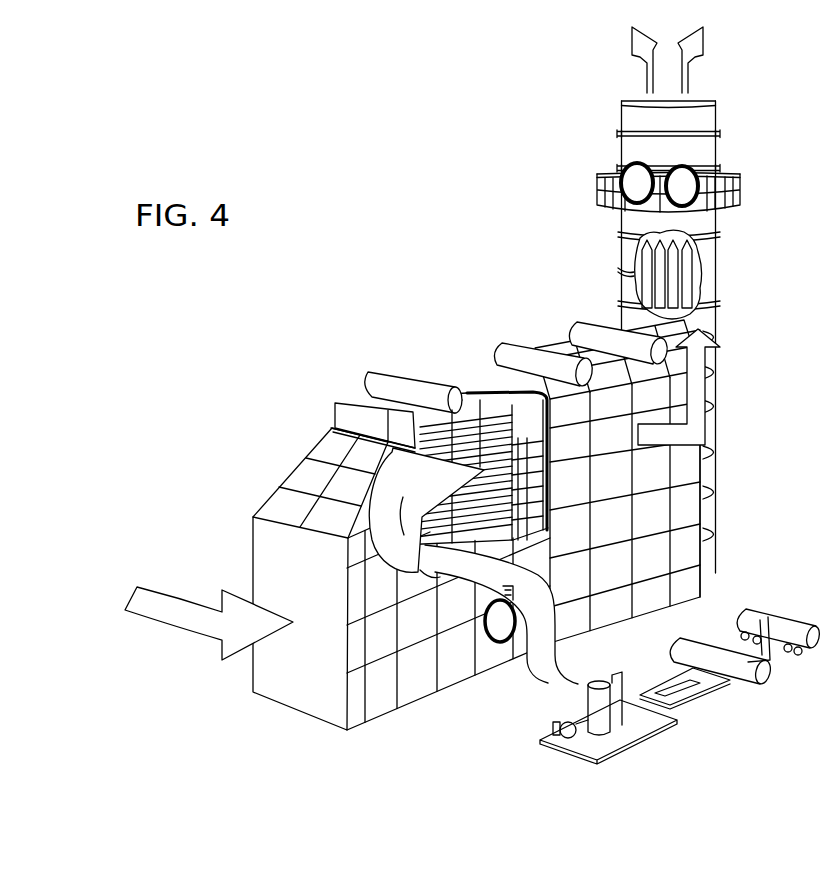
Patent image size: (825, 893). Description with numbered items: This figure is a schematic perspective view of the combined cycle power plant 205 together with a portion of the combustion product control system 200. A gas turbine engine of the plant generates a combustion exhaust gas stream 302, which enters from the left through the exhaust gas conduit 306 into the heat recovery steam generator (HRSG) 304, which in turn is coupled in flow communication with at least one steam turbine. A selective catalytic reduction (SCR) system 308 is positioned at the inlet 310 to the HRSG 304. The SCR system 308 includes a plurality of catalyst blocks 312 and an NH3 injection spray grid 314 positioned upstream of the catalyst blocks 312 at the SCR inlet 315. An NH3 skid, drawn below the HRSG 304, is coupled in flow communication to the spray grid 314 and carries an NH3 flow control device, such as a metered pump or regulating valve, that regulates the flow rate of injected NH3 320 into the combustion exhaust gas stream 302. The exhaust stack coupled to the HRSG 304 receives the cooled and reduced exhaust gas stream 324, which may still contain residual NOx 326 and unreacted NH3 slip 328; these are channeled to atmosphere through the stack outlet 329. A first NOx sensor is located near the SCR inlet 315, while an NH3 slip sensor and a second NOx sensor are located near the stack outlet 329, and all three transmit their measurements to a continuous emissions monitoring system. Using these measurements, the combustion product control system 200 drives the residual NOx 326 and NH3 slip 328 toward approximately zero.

The combustion product control system 200 is at (587, 768).
The combined cycle power plant 205 is at (488, 230).
The combustion exhaust gas stream 302 is at (140, 605).
The heat recovery steam generator (HRSG) 304 is at (668, 467).
The exhaust gas conduit 306 is at (283, 512).
The selective catalytic reduction (SCR) system 308 is at (526, 412).
The inlet 310 is at (472, 432).
The catalyst blocks 312 is at (495, 410).
The NH3 injection spray grid 314 is at (513, 466).
The SCR inlet 315 is at (468, 543).
The injected NH3 320 is at (412, 553).
The reduced exhaust gas stream 324 is at (700, 402).
The residual NOx 326 is at (635, 44).
The NH3 slip 328 is at (704, 42).
The stack outlet 329 is at (628, 131).